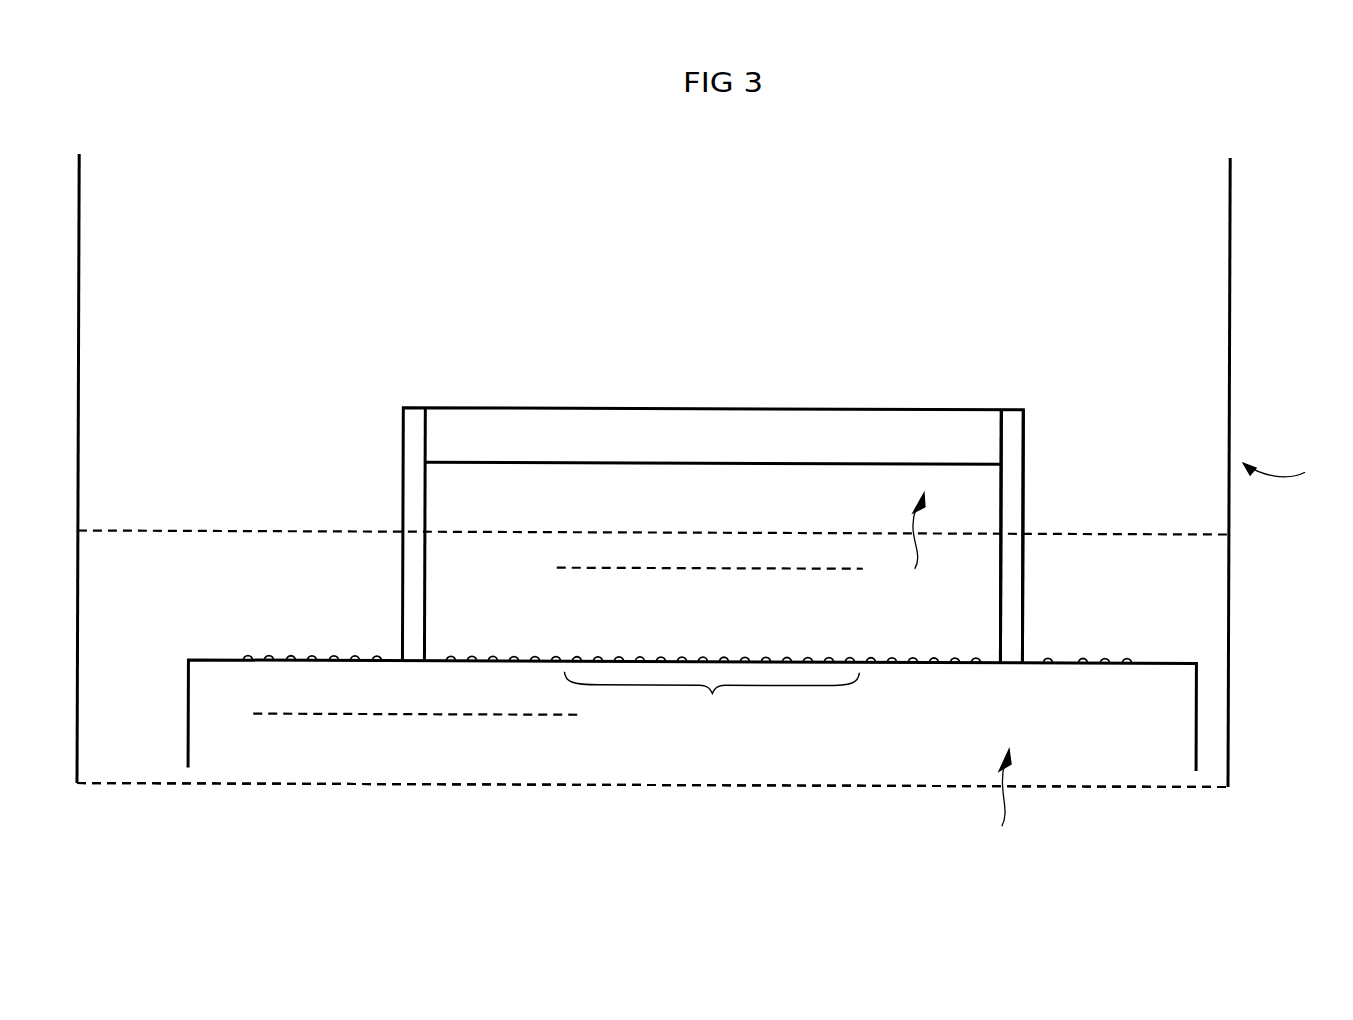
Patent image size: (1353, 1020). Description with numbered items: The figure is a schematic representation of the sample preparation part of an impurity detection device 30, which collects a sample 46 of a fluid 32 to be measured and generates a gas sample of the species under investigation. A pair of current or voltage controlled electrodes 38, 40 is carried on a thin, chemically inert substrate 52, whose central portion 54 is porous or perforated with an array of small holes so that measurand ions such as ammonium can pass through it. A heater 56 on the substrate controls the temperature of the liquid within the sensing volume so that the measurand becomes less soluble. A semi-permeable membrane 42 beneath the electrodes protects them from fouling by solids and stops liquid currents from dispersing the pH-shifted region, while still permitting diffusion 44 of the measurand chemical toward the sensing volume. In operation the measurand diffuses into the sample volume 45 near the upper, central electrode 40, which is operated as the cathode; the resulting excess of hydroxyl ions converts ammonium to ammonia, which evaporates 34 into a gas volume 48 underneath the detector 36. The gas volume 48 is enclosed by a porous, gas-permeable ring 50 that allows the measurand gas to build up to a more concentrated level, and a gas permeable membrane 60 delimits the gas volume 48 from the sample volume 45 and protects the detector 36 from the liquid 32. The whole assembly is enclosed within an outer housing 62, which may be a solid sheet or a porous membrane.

The impurity detection device 30 is at (1292, 475).
The fluid to be measured 32 is at (1190, 869).
The evaporation of generated ammonia gas 34 is at (918, 550).
The detector 36 is at (953, 410).
The electrode 38 is at (487, 717).
The upper central electrode 40 is at (624, 572).
The semi-permeable membrane 42 is at (904, 790).
The diffusion of measurand chemical 44 is at (1005, 808).
The sample volume 45 is at (950, 612).
The sample 46 is at (1230, 726).
The gas volume 48 is at (456, 474).
The porous gas-permeable ring 50 is at (1017, 492).
The substrate 52 is at (1068, 660).
The central portion of substrate 54 is at (713, 695).
The heater 56 is at (328, 658).
The gas permeable membrane 60 is at (751, 530).
The outer housing 62 is at (1231, 262).